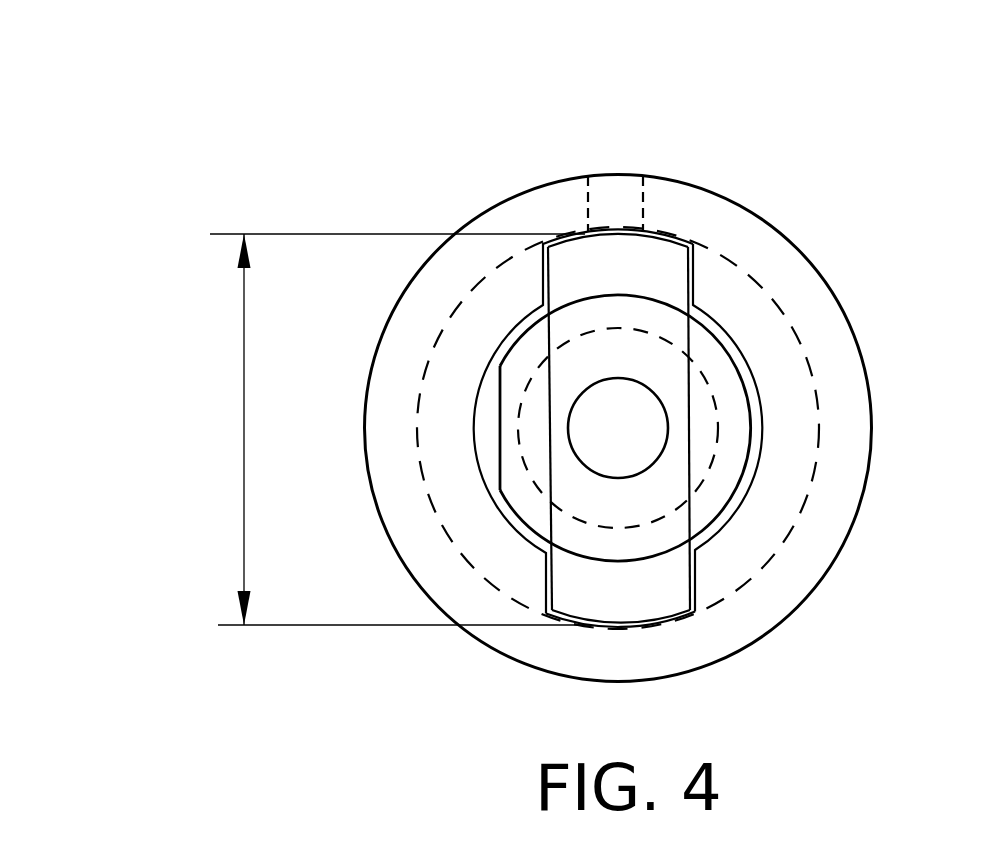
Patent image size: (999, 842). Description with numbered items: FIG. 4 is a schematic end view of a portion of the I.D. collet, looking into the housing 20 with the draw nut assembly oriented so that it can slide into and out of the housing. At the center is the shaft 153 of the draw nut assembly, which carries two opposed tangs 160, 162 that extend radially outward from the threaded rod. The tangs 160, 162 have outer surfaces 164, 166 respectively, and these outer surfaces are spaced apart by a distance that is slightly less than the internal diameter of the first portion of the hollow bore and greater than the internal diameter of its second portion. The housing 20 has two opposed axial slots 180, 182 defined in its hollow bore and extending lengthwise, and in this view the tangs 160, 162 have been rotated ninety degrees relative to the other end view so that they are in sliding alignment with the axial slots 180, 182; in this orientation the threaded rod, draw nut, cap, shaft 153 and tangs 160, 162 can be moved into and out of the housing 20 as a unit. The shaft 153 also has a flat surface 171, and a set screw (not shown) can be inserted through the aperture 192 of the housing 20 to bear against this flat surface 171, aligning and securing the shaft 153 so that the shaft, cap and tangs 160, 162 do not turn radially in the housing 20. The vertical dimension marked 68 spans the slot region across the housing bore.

The housing 20 is at (824, 614).
The slot length dimension 68 is at (378, 429).
The shaft 153 is at (537, 512).
The tang 160 is at (658, 258).
The tang 162 is at (603, 592).
The outer surface 164 is at (573, 230).
The outer surface 166 is at (630, 623).
The flat surface 171 is at (500, 409).
The axial slot 180 is at (695, 270).
The axial slot 182 is at (694, 592).
The aperture 192 is at (608, 185).